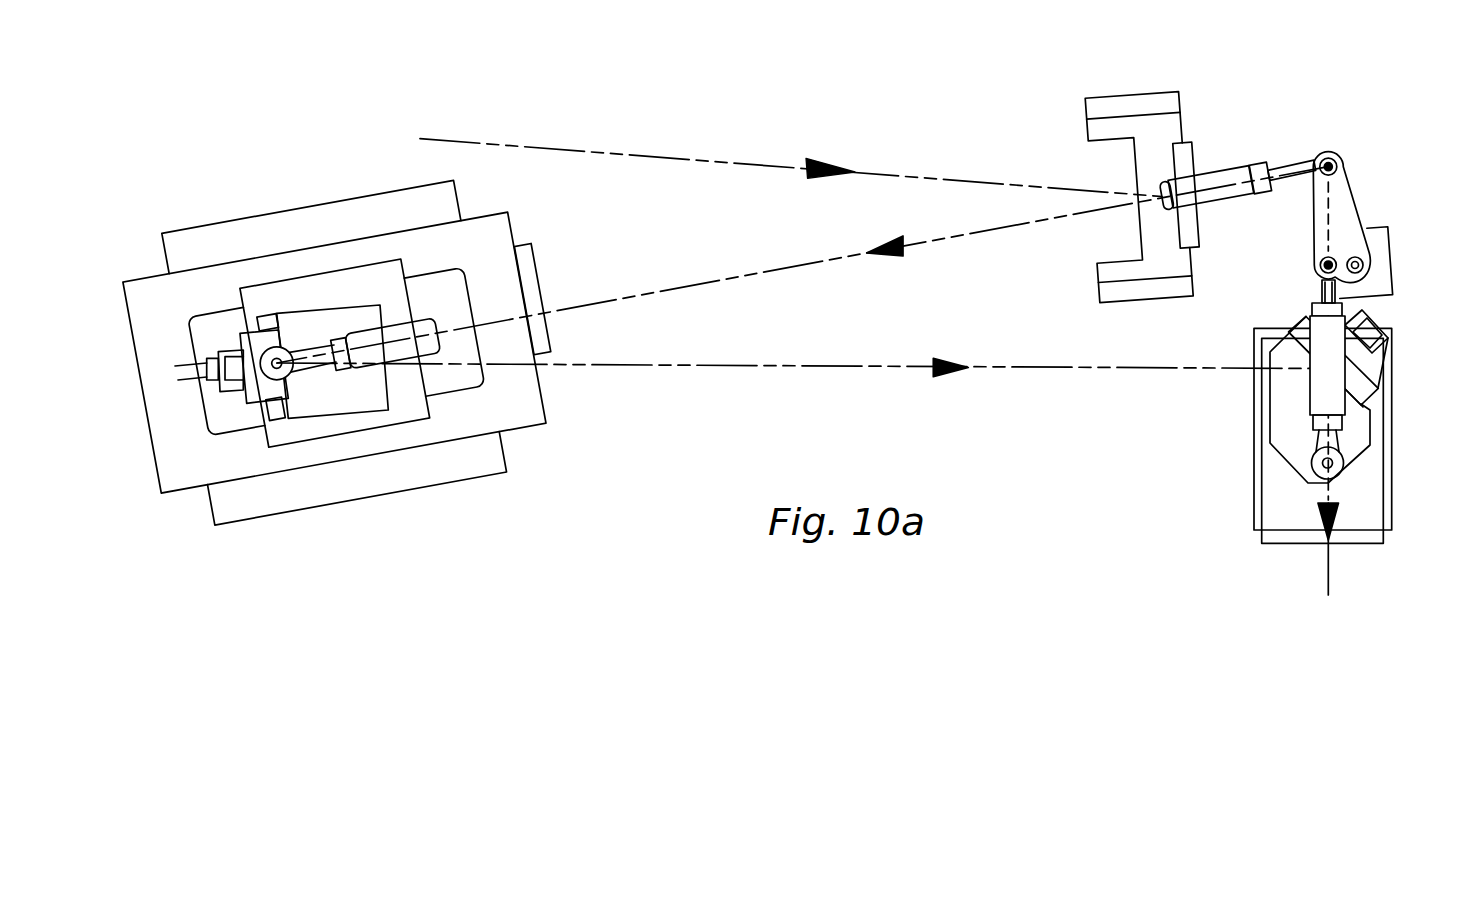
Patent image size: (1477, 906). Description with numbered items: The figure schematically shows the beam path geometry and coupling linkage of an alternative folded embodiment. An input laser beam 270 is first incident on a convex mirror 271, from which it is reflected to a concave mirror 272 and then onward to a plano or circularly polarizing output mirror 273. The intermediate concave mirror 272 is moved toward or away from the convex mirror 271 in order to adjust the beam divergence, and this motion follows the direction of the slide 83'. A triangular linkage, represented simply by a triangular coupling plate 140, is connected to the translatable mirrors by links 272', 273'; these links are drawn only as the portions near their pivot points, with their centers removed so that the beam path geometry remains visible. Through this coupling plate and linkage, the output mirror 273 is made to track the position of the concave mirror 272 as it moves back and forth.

The input laser beam 270 is at (692, 158).
The convex mirror 271 is at (1190, 168).
The concave mirror 272 is at (219, 466).
The link 272' is at (810, 212).
The triangular coupling plate 140 is at (1363, 219).
The output mirror 273 is at (1364, 422).
The link 273' is at (1242, 397).
The slide 83' is at (335, 439).